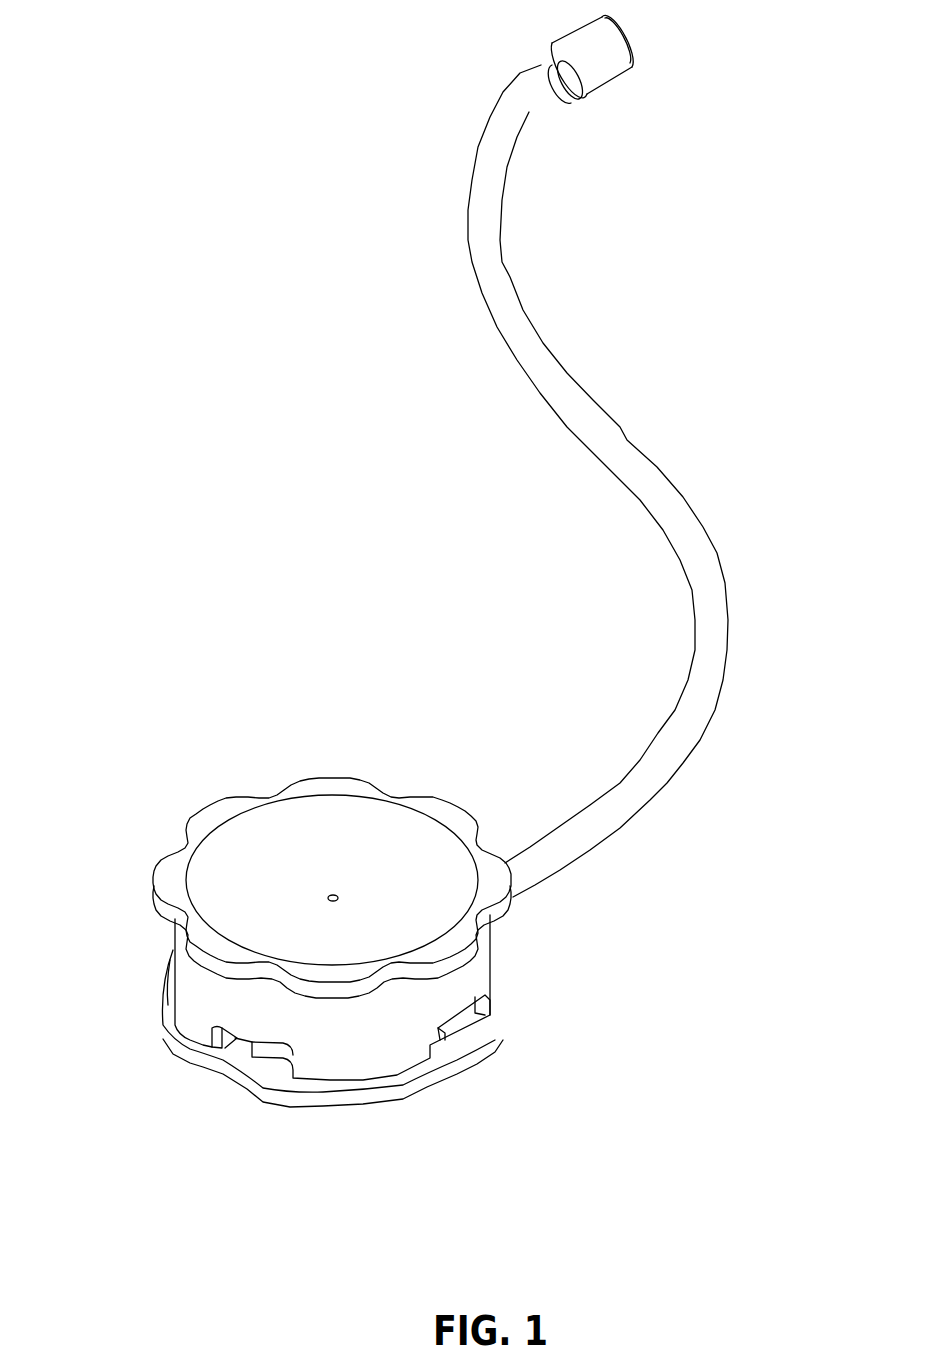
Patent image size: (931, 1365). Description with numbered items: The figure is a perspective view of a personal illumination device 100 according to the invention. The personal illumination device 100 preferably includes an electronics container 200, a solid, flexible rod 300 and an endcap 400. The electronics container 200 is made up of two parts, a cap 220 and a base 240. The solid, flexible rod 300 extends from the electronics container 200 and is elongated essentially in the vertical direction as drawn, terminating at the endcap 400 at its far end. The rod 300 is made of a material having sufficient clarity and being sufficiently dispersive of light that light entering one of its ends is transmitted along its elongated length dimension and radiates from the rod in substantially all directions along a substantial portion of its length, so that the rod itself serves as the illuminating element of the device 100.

The personal illumination device 100 is at (645, 1023).
The electronics container 200 is at (288, 742).
The cap 220 is at (222, 995).
The base 240 is at (457, 1043).
The solid, flexible rod 300 is at (650, 410).
The endcap 400 is at (658, 28).